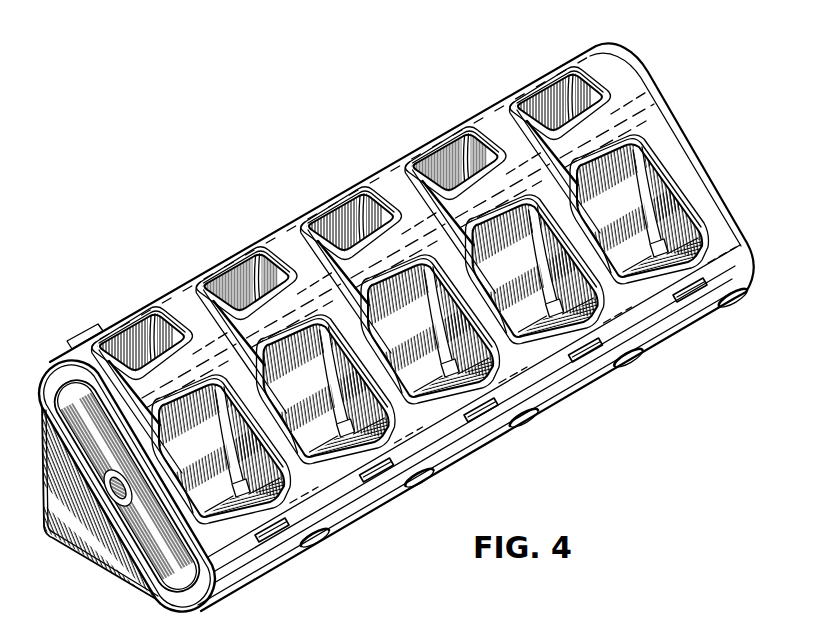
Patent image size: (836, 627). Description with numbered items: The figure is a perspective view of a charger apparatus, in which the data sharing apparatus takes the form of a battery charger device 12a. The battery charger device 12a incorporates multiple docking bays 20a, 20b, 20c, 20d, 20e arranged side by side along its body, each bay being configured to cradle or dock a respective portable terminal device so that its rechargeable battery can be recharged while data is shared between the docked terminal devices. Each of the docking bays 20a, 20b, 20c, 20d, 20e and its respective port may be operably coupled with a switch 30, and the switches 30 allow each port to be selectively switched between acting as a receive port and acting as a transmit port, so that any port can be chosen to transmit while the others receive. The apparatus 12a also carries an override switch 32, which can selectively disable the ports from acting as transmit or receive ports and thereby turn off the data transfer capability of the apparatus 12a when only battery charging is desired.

The battery charger device 12a is at (716, 150).
The docking bay 20a is at (241, 505).
The docking bay 20b is at (347, 455).
The docking bay 20c is at (448, 400).
The docking bay 20d is at (553, 340).
The docking bay 20e is at (654, 276).
The switch 30 is at (270, 535).
The override switch 32 is at (82, 335).